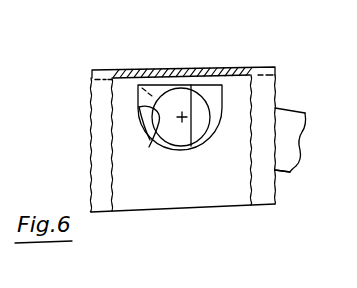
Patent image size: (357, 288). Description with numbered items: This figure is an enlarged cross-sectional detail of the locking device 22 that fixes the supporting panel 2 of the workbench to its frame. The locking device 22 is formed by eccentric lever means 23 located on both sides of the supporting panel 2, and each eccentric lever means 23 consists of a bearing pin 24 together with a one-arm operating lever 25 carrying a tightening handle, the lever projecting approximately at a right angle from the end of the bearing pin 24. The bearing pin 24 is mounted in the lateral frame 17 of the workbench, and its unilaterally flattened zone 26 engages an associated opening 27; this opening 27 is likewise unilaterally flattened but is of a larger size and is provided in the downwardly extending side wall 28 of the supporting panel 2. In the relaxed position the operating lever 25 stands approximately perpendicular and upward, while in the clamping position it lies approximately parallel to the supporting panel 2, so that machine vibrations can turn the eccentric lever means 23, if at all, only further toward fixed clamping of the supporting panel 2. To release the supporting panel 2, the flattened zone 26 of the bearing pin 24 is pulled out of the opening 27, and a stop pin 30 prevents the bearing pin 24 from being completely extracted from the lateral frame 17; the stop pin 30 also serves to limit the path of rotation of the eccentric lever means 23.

The supporting panel 2 is at (222, 65).
The lateral frame 17 is at (102, 103).
The locking device 22 is at (139, 59).
The eccentric lever means 23 is at (292, 106).
The bearing pin 24 is at (198, 125).
The one-arm operating lever 25 is at (283, 138).
The unilaterally flattened zone 26 is at (173, 99).
The opening 27 is at (150, 140).
The side wall 28 is at (125, 148).
The stop pin 30 is at (148, 93).